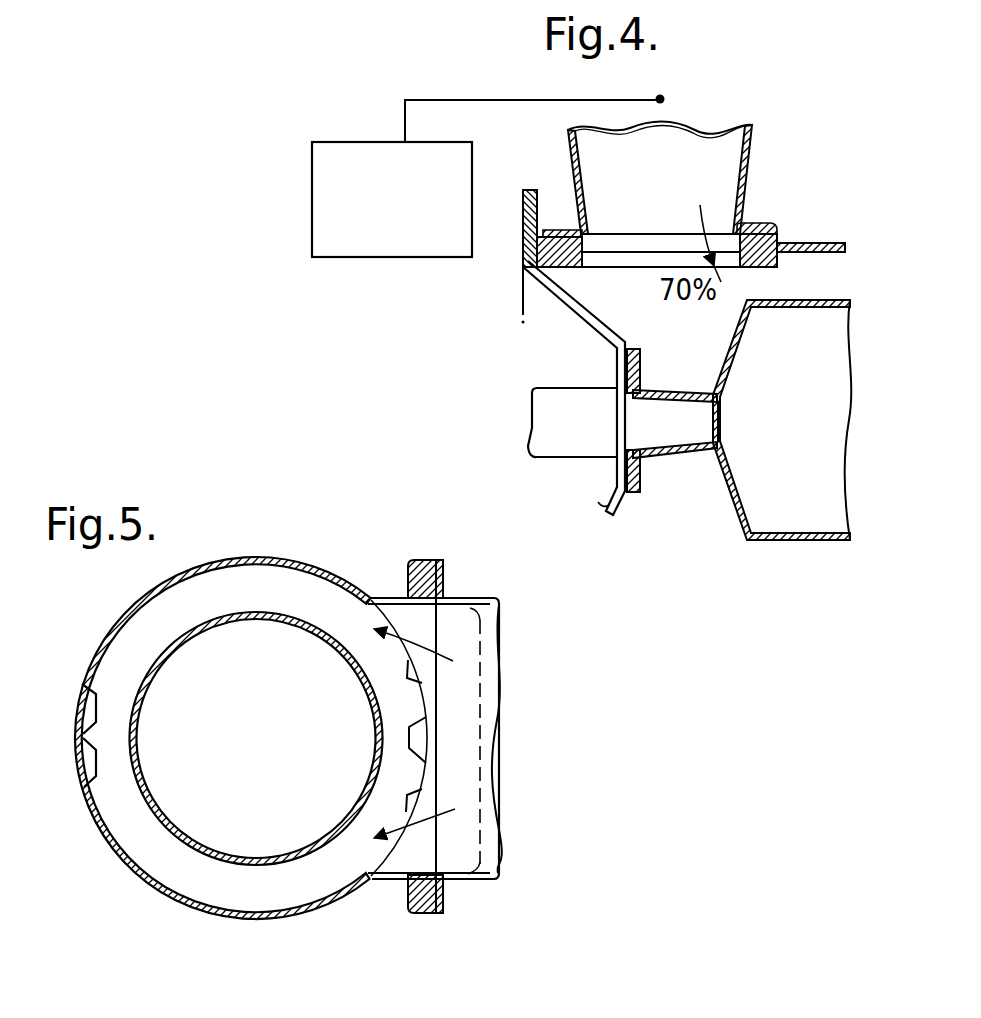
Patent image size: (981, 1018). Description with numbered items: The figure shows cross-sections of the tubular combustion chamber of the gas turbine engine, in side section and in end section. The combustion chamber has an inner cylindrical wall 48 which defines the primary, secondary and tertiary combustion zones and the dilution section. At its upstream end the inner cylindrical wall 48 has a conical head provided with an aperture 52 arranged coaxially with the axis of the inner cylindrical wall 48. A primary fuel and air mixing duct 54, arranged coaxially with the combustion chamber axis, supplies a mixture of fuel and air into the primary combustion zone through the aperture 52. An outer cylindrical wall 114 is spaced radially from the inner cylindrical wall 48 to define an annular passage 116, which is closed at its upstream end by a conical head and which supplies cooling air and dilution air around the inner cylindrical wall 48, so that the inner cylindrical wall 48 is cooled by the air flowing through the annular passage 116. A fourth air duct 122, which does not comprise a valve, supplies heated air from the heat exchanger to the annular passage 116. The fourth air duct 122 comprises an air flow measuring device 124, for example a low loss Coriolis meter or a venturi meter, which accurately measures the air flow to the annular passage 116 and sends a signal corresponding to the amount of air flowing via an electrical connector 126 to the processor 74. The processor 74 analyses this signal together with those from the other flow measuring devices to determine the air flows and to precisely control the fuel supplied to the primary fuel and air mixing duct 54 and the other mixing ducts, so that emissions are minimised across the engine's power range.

In FIG. 4, the inner cylindrical wall 48 is at (852, 307).
In FIG. 5, the inner cylindrical wall 48 is at (252, 612).
In FIG. 4, the aperture 52 is at (712, 418).
In FIG. 4, the primary fuel and air mixing duct 54 is at (679, 458).
In FIG. 4, the processor 74 is at (407, 212).
In FIG. 4, the outer cylindrical wall 114 is at (814, 243).
In FIG. 5, the outer cylindrical wall 114 is at (336, 574).
In FIG. 4, the annular passage 116 is at (835, 289).
In FIG. 5, the annular passage 116 is at (345, 615).
In FIG. 4, the fourth air duct 122 is at (568, 141).
In FIG. 5, the fourth air duct 122 is at (476, 874).
In FIG. 4, the air flow measuring device 124 is at (664, 99).
In FIG. 4, the electrical connector 126 is at (479, 100).